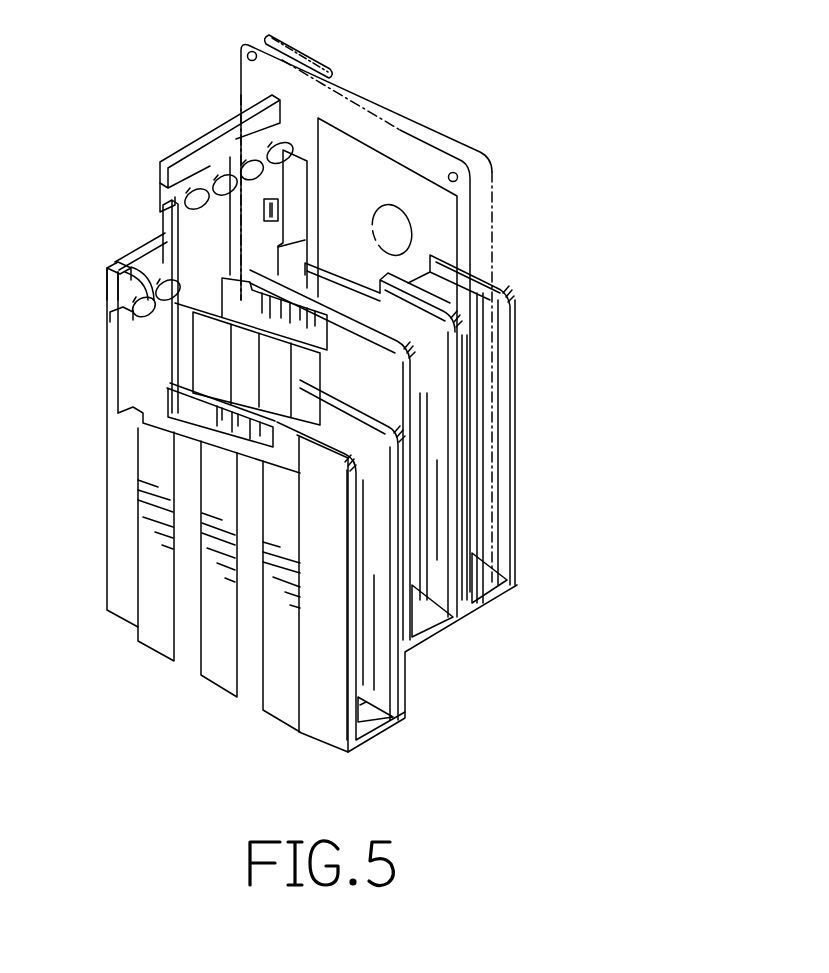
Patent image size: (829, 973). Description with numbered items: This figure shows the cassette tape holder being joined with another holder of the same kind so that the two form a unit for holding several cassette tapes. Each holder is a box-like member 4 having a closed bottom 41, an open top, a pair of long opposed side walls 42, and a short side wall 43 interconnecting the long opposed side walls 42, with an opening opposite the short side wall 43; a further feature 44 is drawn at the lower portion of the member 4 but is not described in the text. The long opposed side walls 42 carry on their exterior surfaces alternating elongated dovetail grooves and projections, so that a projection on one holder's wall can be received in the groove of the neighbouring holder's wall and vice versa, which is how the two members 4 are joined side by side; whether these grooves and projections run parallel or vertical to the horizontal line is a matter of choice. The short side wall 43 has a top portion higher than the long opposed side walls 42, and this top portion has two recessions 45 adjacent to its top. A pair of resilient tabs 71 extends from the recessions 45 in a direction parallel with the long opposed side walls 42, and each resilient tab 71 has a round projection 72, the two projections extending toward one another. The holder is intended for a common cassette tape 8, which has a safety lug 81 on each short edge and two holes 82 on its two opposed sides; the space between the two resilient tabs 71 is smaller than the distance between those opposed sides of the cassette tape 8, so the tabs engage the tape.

The box-like member 4 is at (92, 315).
The cassette tape 8 is at (420, 122).
The closed bottom 41 is at (380, 715).
The long opposed side walls 42 is at (318, 725).
The short side wall 43 is at (105, 272).
The channel bottom 44 is at (360, 715).
The recessions 45 is at (104, 298).
The resilient tabs 71 is at (143, 297).
The round projection 72 is at (138, 313).
The safety lug 81 is at (313, 54).
The holes 82 is at (232, 122).